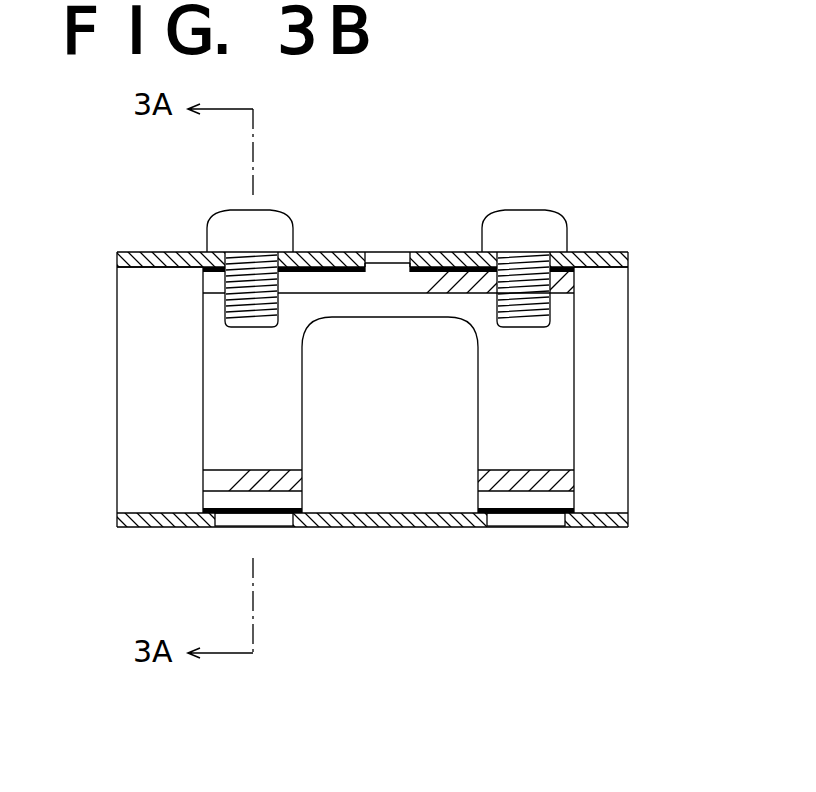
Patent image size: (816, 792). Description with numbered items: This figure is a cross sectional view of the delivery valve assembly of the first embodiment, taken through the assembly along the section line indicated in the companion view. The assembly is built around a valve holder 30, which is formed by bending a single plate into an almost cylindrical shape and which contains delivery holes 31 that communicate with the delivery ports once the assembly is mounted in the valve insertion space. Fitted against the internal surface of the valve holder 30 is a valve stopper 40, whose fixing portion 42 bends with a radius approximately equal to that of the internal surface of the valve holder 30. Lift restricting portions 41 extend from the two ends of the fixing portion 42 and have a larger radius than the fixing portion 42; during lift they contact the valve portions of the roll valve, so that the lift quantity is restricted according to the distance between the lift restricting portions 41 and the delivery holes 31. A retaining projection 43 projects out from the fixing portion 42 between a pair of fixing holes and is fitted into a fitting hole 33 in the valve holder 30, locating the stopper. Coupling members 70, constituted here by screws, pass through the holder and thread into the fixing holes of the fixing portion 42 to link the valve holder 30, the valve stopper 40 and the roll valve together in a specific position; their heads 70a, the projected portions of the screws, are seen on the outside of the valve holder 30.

The valve holder 30 is at (420, 522).
The delivery holes 31 is at (295, 517).
The fitting hole 33 is at (397, 268).
The valve stopper 40 is at (553, 393).
The lift restricting portions 41 is at (565, 488).
The fixing portion 42 is at (470, 284).
The retaining projection 43 is at (378, 262).
The coupling members 70 is at (386, 226).
The heads 70a is at (222, 232).